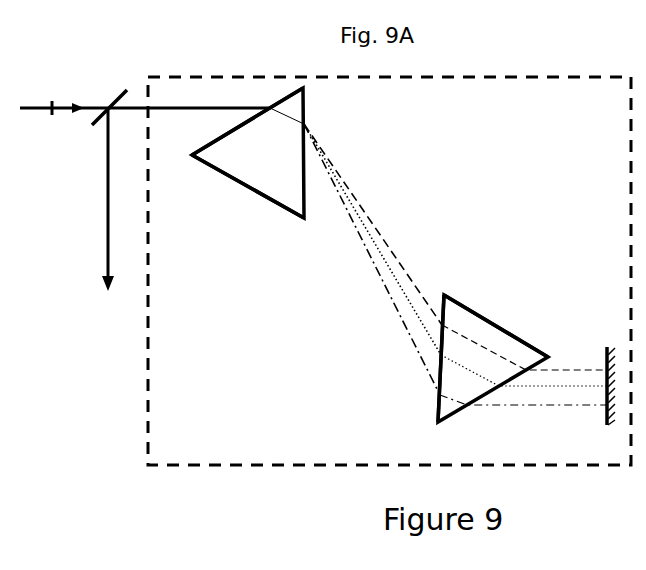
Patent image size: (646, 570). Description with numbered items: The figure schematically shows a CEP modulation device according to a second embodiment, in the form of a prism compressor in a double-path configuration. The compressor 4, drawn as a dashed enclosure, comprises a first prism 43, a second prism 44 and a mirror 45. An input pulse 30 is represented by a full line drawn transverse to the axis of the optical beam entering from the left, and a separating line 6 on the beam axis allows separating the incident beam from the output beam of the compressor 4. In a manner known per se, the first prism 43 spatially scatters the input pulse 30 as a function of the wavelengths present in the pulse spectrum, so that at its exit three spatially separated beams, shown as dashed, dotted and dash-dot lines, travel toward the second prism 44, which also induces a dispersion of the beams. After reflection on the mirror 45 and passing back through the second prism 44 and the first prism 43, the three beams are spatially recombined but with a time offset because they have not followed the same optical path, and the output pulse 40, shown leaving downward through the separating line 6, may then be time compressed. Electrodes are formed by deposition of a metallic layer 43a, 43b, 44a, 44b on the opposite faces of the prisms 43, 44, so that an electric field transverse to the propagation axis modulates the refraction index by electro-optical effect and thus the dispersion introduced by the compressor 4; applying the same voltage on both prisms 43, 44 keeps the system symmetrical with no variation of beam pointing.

The compressor 4 is at (147, 460).
The separating line 6 is at (127, 88).
The input pulse 30 is at (53, 102).
The output pulse 40 is at (102, 203).
The first prism 43 is at (306, 90).
The metallic layer 43a is at (235, 149).
The metallic layer 43b is at (239, 187).
The second prism 44 is at (447, 296).
The metallic layer 44a is at (438, 402).
The metallic layer 44b is at (508, 360).
The mirror 45 is at (607, 418).